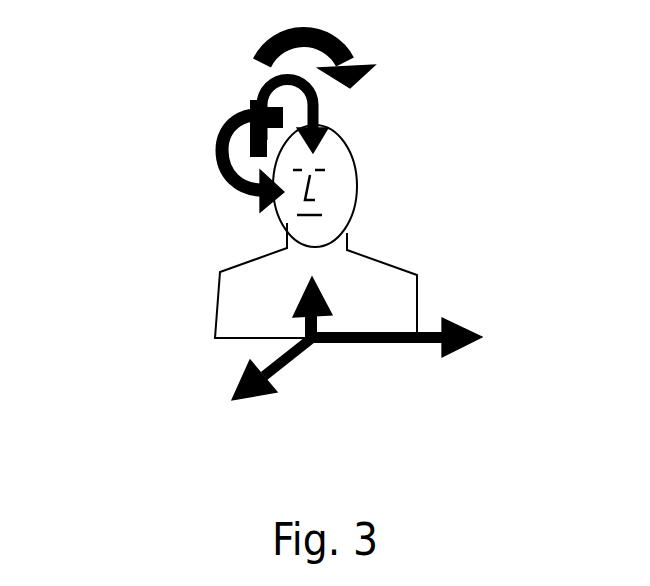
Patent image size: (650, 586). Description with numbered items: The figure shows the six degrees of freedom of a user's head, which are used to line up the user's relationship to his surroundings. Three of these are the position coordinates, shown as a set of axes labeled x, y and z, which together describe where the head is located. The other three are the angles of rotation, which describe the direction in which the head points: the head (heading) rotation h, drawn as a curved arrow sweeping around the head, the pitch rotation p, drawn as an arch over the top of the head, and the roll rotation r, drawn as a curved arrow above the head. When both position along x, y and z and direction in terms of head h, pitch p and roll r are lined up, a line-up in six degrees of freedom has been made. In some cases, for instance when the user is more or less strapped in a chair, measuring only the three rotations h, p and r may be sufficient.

The pitch p is at (250, 90).
The head h is at (213, 187).
The roll r is at (377, 43).
The x position x is at (280, 398).
The y position y is at (422, 355).
The z position z is at (343, 290).